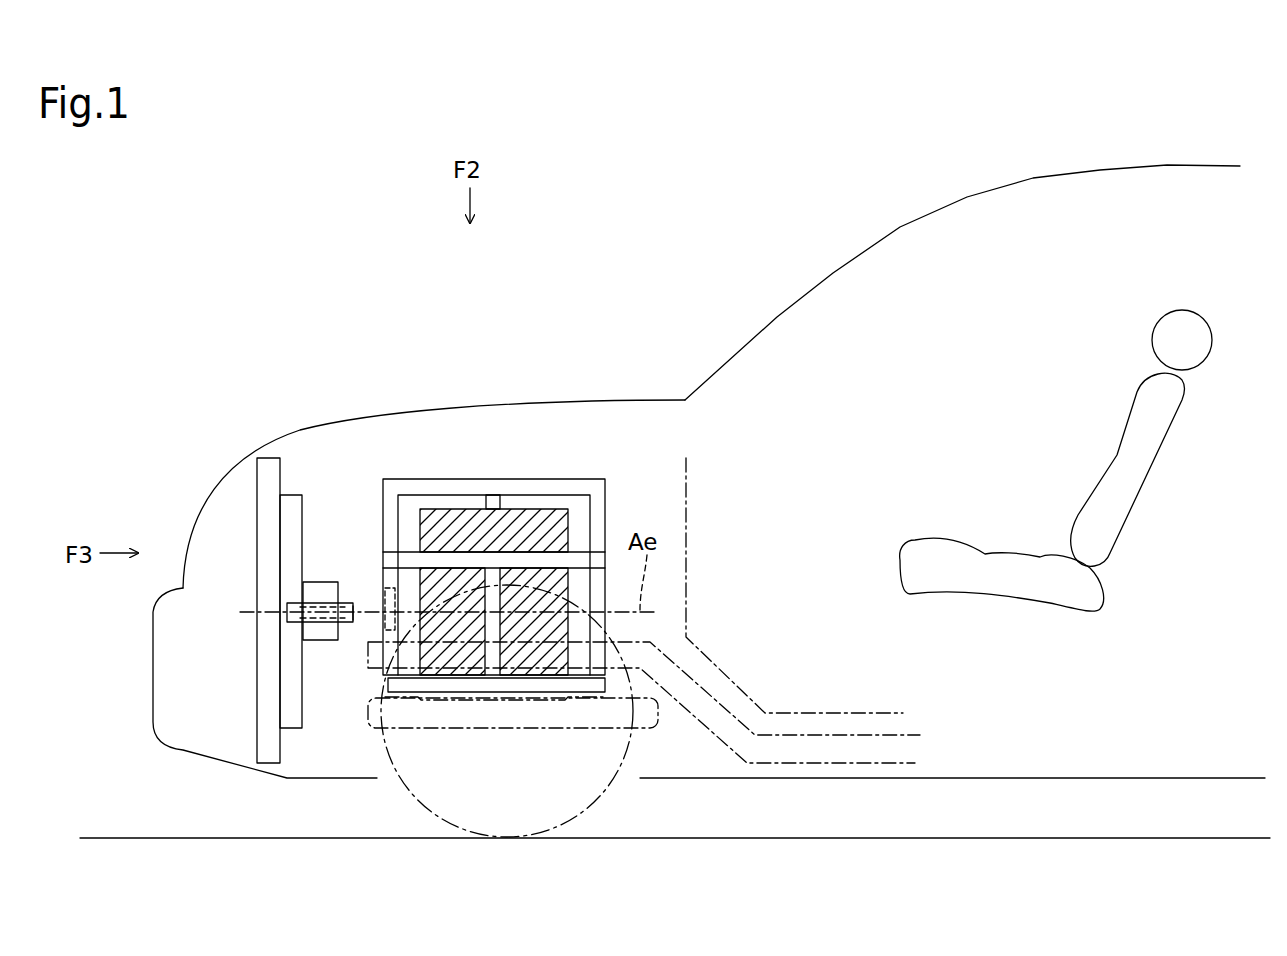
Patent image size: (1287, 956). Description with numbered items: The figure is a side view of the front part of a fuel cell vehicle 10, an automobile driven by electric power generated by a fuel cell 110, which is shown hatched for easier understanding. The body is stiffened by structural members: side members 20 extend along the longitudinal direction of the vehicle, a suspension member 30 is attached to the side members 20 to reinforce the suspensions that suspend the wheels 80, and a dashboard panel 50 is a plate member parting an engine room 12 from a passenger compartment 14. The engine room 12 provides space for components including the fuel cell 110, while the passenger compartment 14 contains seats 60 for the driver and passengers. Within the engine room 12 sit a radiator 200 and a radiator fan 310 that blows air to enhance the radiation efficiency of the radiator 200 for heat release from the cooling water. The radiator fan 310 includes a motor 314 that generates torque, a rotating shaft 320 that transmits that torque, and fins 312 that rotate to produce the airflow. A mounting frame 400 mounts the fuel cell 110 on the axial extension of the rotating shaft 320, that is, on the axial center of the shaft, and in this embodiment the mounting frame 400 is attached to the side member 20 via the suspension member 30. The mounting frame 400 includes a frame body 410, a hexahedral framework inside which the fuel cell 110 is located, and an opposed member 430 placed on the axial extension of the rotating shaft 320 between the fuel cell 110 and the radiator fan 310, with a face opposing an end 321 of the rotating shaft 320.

The fuel cell vehicle 10 is at (333, 152).
The engine room 12 is at (634, 452).
The passenger compartment 14 is at (920, 371).
The side member 20 is at (920, 728).
The suspension member 30 is at (512, 730).
The dashboard panel 50 is at (687, 538).
The seat 60 is at (1138, 498).
The wheel 80 is at (605, 797).
The fuel cell 110 is at (538, 509).
The radiator 200 is at (262, 458).
The radiator fan 310 is at (272, 342).
The fins 312 is at (292, 495).
The motor 314 is at (318, 582).
The rotating shaft 320 is at (350, 603).
The end of the rotating shaft 321 is at (362, 618).
The mounting frame 400 is at (397, 342).
The frame body 410 is at (493, 495).
The opposed member 430 is at (385, 600).